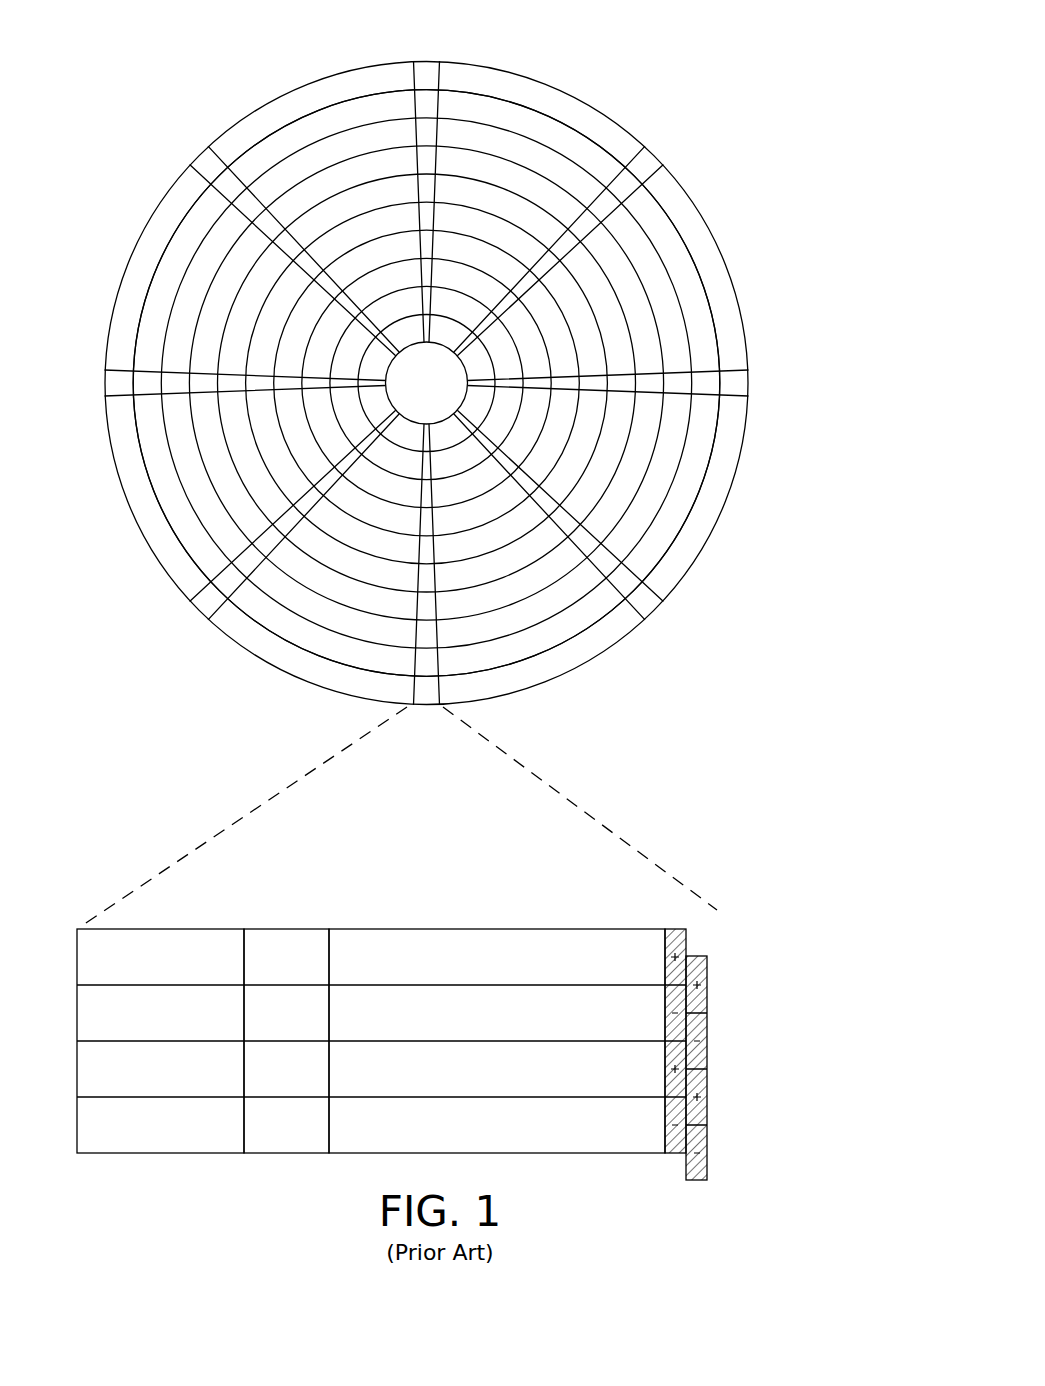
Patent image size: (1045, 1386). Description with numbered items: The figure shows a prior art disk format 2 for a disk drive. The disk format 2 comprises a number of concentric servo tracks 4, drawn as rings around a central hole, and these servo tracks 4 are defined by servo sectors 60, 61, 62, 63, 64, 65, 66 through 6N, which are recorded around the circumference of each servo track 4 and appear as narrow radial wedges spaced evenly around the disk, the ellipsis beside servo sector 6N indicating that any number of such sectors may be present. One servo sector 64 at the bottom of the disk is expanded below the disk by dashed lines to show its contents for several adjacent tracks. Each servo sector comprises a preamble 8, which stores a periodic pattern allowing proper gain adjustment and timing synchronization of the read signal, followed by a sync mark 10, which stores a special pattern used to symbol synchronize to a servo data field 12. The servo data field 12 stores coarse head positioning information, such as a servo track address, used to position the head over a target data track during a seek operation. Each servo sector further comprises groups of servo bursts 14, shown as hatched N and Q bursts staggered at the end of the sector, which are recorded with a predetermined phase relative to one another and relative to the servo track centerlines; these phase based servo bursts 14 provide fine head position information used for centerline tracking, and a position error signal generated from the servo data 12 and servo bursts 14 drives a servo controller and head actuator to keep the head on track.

The disk format 2 is at (186, 64).
The servo track 4 is at (538, 125).
The servo sector 60 is at (427, 70).
The servo sector 61 is at (647, 162).
The servo sector 62 is at (748, 383).
The servo sector 63 is at (647, 603).
The servo sector 64 is at (284, 781).
The servo sector 65 is at (203, 605).
The servo sector 66 is at (110, 383).
The servo sector 6N is at (207, 162).
The preamble 8 is at (168, 928).
The sync mark 10 is at (291, 928).
The servo data field 12 is at (486, 928).
The servo bursts 14 is at (707, 924).